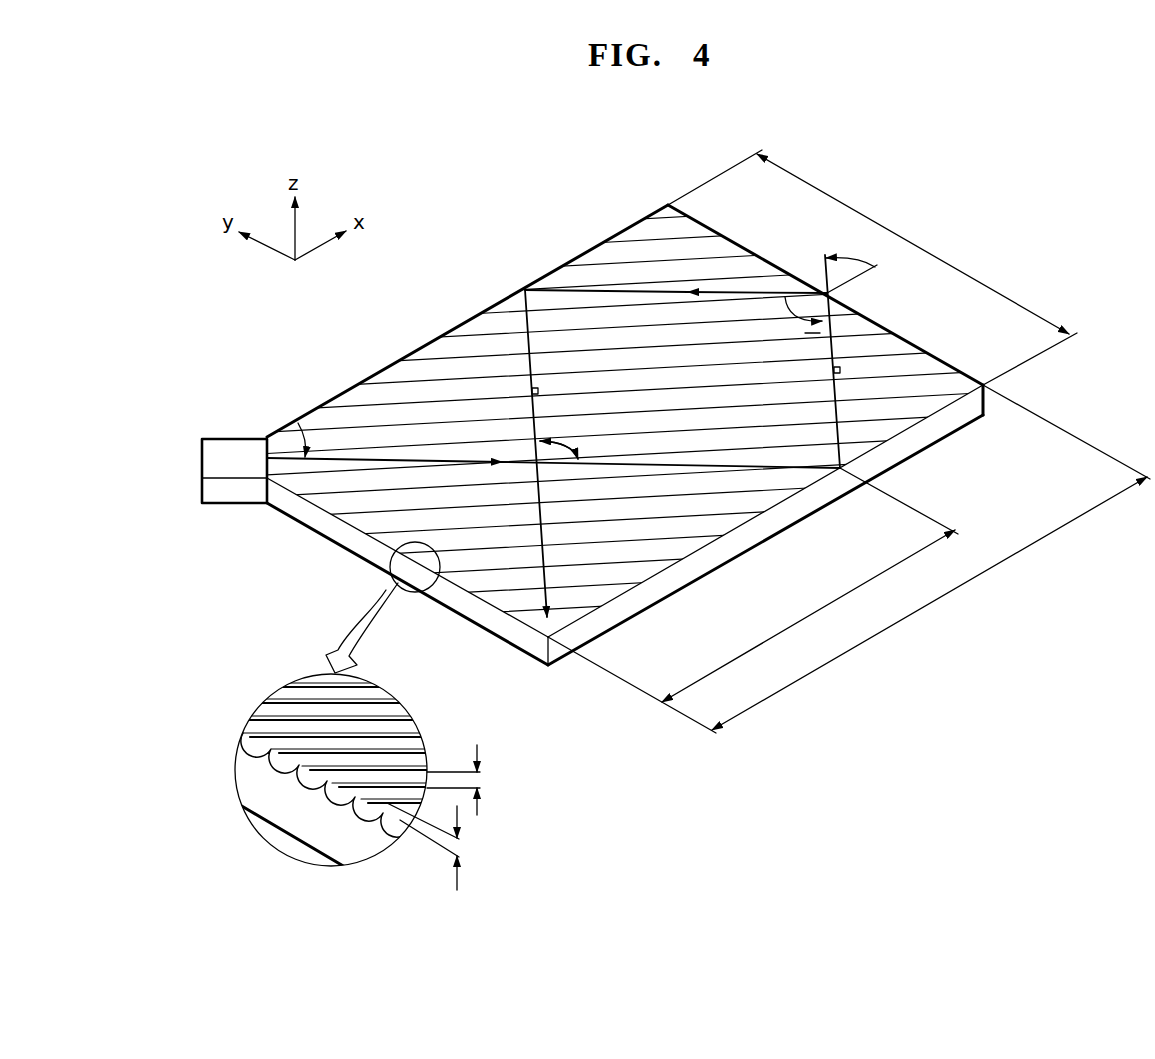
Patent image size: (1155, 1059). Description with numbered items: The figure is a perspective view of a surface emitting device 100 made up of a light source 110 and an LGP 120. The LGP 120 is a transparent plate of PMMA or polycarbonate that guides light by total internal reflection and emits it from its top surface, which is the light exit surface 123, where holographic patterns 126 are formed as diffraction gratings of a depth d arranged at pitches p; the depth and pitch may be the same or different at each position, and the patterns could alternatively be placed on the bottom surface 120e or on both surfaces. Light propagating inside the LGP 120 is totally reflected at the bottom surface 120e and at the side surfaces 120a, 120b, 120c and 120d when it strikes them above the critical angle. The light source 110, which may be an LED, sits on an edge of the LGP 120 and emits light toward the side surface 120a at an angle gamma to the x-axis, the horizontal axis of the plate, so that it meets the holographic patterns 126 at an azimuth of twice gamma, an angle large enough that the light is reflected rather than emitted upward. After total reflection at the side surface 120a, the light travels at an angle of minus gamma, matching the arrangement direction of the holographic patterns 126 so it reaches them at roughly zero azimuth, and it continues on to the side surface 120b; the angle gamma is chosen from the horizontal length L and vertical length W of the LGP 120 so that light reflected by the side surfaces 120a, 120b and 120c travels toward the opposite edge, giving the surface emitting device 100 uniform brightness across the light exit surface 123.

The surface emitting device 100 is at (985, 226).
The light source 110 is at (240, 440).
The LGP 120 is at (653, 204).
The side surface 120a is at (618, 618).
The side surface 120b is at (763, 258).
The side surface 120c is at (428, 343).
The side surface 120d is at (524, 641).
The bottom surface 120e is at (903, 443).
The light exit surface 123 is at (362, 400).
The holographic patterns 126 is at (403, 405).